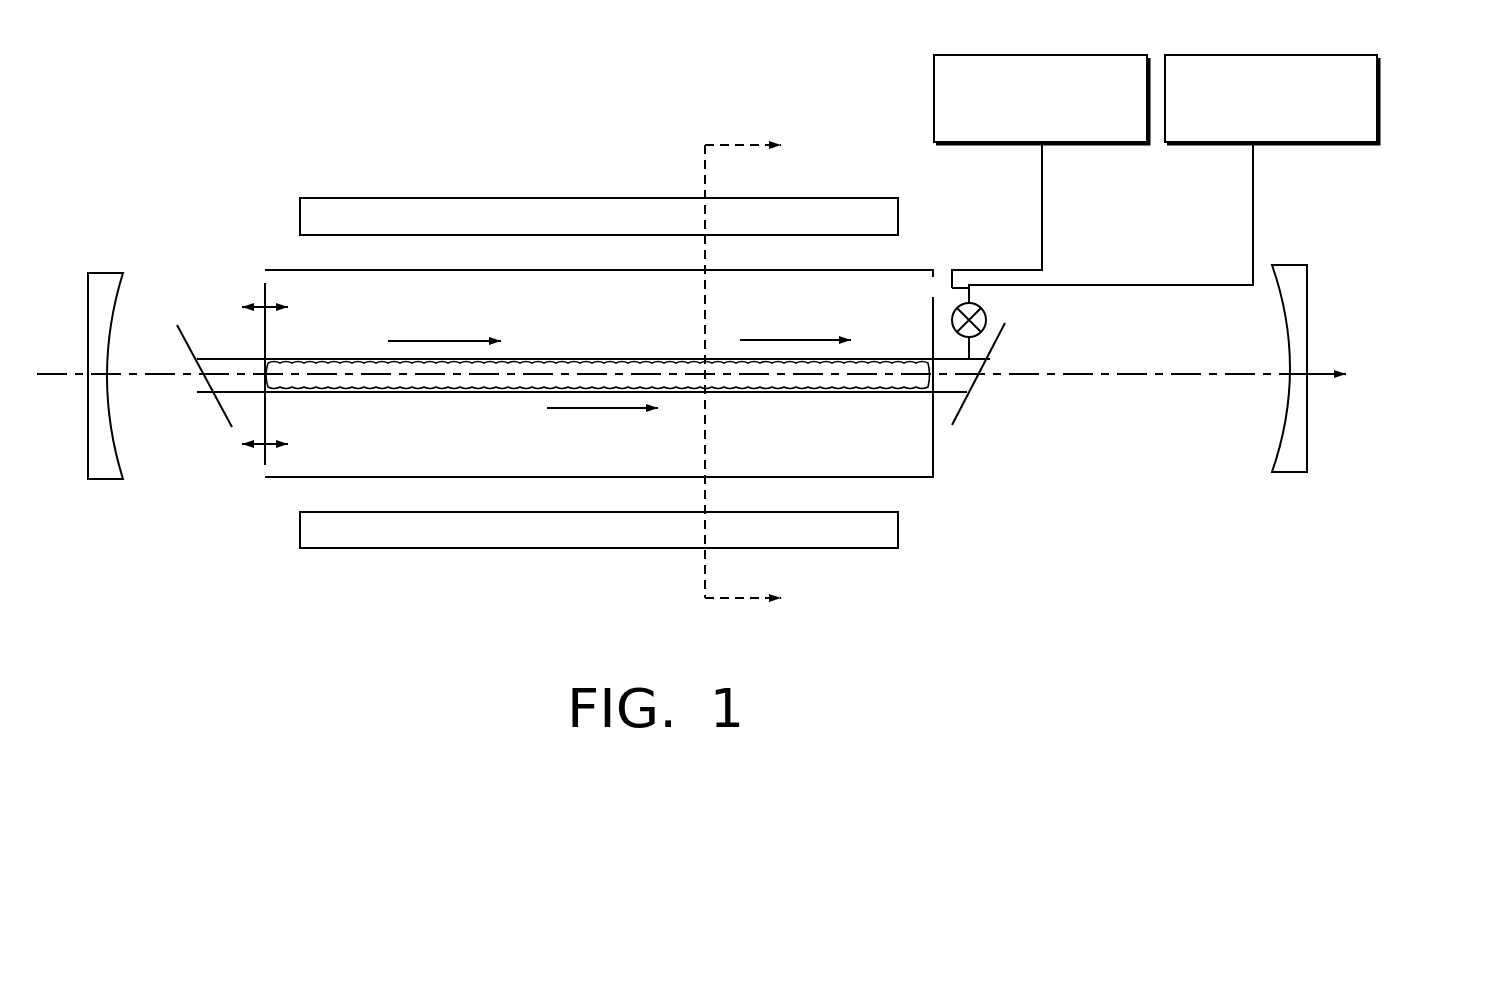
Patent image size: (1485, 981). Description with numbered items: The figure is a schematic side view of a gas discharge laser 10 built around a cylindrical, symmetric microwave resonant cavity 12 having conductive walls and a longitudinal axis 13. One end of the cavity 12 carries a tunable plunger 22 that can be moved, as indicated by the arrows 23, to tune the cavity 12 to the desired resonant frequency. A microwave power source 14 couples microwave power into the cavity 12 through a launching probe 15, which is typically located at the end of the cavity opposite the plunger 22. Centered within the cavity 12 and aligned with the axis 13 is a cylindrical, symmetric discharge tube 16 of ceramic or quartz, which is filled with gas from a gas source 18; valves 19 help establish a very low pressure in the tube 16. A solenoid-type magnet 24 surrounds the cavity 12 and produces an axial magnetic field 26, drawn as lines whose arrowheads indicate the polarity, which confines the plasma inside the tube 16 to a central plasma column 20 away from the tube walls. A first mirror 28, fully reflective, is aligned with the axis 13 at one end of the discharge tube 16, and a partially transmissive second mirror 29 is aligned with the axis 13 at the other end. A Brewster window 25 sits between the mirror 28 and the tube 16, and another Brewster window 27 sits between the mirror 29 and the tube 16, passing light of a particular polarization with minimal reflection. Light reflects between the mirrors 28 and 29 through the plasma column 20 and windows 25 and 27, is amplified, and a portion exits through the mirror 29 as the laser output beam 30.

The gas discharge laser 10 is at (246, 167).
The microwave resonant cavity 12 is at (588, 322).
The longitudinal axis 13 is at (50, 375).
The microwave power source 14 is at (934, 93).
The launching probe 15 is at (918, 304).
The discharge tube 16 is at (847, 392).
The gas source 18 is at (1203, 55).
The valves 19 is at (986, 317).
The plasma column 20 is at (521, 387).
The tunable plunger 22 is at (265, 341).
The arrows 23 is at (272, 308).
The magnet 24 is at (443, 198).
The Brewster window 25 is at (203, 382).
The axial magnetic field 26 is at (443, 341).
The Brewster window 27 is at (960, 412).
The first mirror 28 is at (105, 480).
The second mirror 29 is at (1290, 472).
The laser output beam 30 is at (1318, 368).